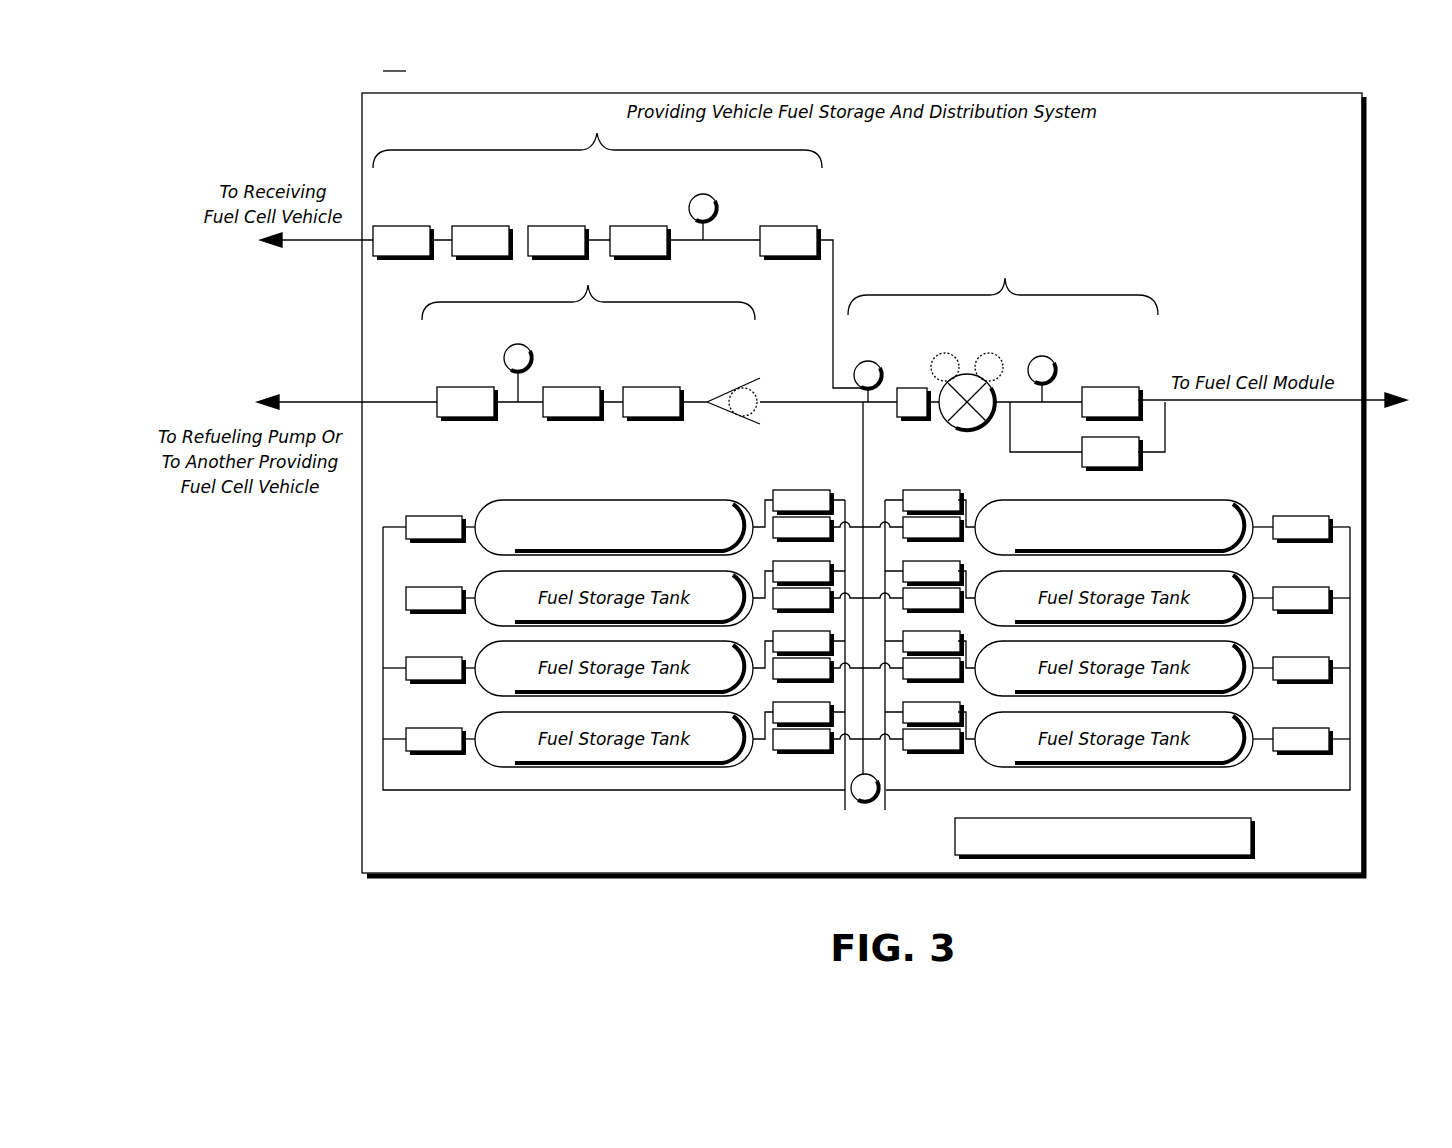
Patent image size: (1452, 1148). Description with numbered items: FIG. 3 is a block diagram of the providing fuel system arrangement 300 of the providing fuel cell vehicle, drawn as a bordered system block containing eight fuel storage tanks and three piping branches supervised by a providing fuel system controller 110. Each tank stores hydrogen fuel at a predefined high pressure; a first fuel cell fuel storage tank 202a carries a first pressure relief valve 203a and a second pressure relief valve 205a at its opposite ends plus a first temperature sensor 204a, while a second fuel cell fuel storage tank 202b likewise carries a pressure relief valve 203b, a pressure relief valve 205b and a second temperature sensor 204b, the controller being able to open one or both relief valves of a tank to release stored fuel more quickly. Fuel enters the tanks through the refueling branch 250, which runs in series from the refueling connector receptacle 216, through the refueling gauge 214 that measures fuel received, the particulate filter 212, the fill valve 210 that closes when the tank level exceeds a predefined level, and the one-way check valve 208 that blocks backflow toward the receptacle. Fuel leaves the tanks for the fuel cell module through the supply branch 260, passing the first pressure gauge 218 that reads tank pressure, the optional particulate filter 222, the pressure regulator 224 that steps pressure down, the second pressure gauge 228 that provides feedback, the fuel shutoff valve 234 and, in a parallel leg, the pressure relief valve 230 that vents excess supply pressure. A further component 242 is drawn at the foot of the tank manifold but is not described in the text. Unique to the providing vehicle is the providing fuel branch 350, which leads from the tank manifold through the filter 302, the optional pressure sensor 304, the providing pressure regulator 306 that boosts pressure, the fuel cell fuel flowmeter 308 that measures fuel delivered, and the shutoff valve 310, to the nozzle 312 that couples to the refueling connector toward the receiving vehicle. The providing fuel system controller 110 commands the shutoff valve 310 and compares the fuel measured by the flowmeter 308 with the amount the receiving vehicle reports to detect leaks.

The providing fuel system arrangement 300 is at (1015, 93).
The providing fuel branch 350 is at (533, 150).
The nozzle 312 is at (412, 226).
The shutoff valve 310 is at (488, 226).
The fuel cell fuel flowmeter 308 is at (557, 226).
The providing pressure regulator 306 is at (640, 226).
The pressure sensor 304 is at (691, 202).
The filter 302 is at (784, 226).
The refueling branch 250 is at (529, 302).
The refueling connector receptacle 216 is at (454, 387).
The refueling gauge 214 is at (522, 344).
The particulate filter 212 is at (578, 387).
The fill valve 210 is at (658, 387).
The check valve 208 is at (748, 382).
The supply branch 260 is at (974, 294).
The first pressure gauge 218 is at (880, 366).
The particulate filter 222 is at (914, 418).
The pressure regulator 224 is at (966, 350).
The second pressure gauge 228 is at (1057, 356).
The fuel shutoff valve 234 is at (1108, 392).
The pressure relief valve 230 is at (1140, 452).
The sensor 242 is at (873, 804).
The second pressure relief valve 205a is at (434, 516).
The first fuel cell fuel storage tank 202a is at (652, 500).
The first pressure relief valve 203a is at (786, 490).
The first temperature sensor 204a is at (800, 530).
The second pressure relief valve 203b is at (920, 490).
The second temperature sensor 204b is at (948, 530).
The second fuel cell fuel storage tank 202b is at (1218, 500).
The second pressure relief valve 205b is at (1298, 516).
The providing fuel system controller 110 is at (1252, 826).